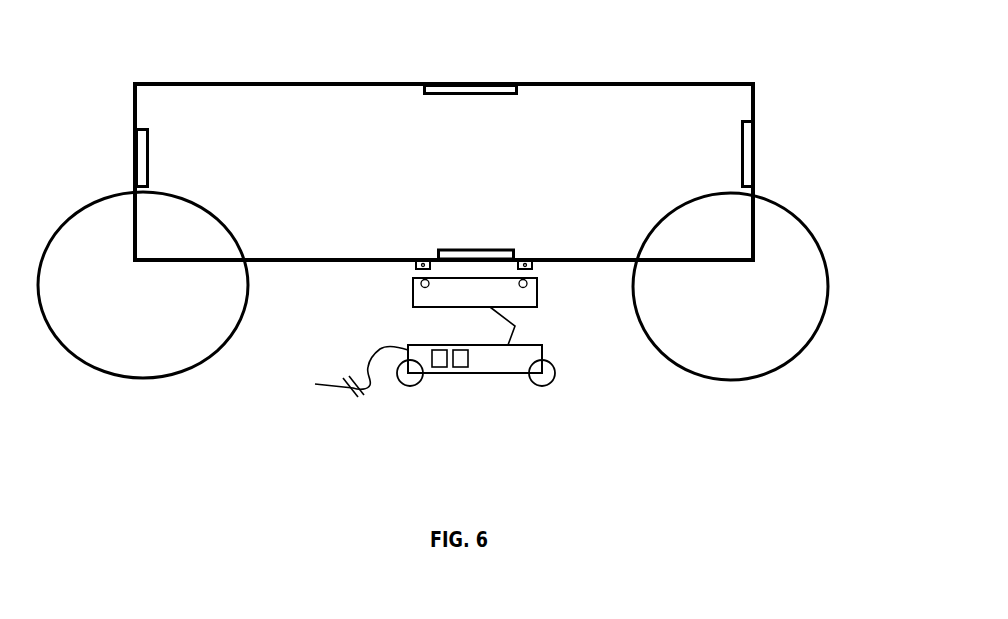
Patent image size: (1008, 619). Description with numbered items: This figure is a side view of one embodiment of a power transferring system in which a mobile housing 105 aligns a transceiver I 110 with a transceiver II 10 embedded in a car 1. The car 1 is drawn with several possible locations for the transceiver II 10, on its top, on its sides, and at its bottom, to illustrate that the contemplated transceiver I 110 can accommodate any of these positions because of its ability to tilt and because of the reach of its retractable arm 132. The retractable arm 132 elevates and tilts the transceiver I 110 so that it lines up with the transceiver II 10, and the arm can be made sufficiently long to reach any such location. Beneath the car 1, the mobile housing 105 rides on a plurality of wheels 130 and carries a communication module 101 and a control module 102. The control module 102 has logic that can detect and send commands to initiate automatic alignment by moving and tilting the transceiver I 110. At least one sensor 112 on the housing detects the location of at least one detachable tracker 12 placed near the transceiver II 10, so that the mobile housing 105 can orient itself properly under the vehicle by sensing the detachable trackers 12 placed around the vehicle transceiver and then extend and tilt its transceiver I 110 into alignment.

The car 1 is at (652, 118).
The transceiver II 10 is at (442, 90).
The detachable tracker 12 is at (417, 260).
The transceiver I 110 is at (425, 295).
The sensor 112 is at (537, 285).
The retractable arm 132 is at (513, 327).
The wheels 130 is at (505, 412).
The mobile housing 105 is at (503, 371).
The control module 102 is at (470, 373).
The communication module 101 is at (435, 372).